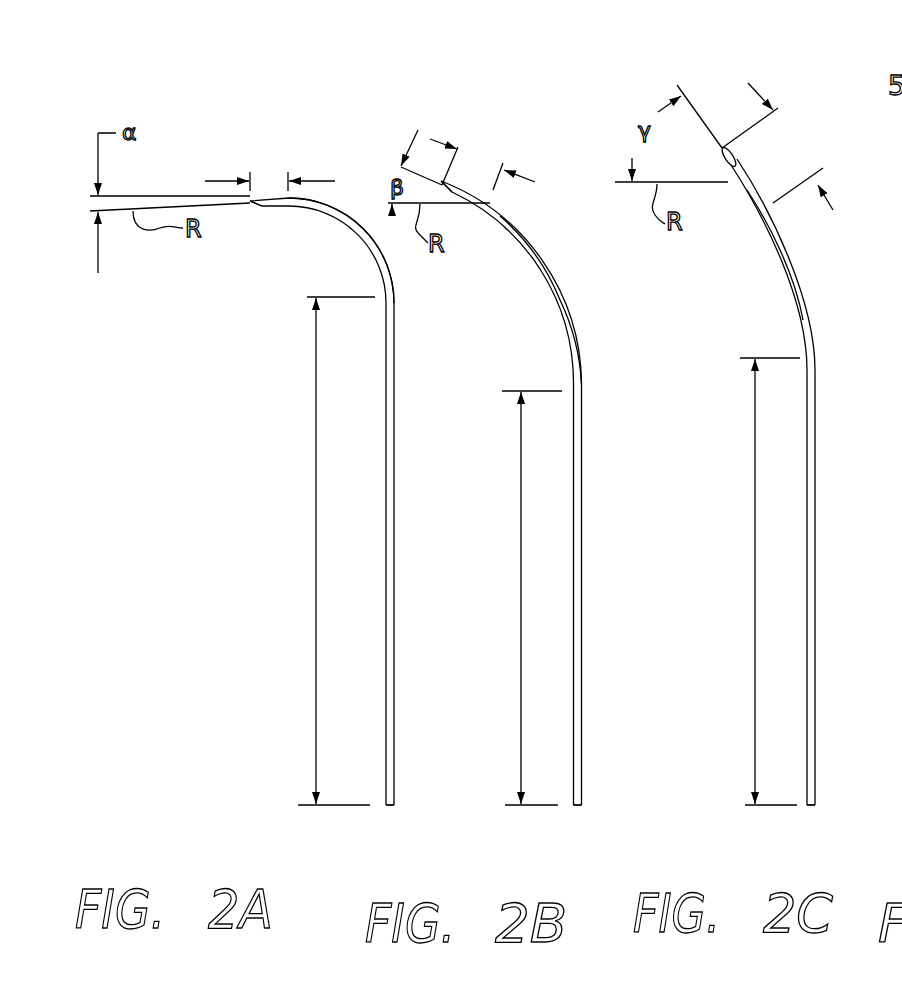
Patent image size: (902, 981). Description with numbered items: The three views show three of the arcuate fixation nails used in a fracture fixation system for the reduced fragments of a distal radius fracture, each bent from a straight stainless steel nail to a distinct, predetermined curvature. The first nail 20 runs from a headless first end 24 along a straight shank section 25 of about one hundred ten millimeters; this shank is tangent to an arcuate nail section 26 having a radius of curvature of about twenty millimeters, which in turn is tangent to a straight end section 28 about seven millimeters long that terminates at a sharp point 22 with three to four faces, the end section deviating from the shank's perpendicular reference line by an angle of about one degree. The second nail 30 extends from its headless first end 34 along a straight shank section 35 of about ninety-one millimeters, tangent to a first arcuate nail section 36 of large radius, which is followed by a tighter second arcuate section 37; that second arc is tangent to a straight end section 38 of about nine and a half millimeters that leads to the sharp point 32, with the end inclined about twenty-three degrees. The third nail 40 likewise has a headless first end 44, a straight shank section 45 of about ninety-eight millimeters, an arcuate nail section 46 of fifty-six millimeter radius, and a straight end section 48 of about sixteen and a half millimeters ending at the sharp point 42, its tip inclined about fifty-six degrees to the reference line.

In FIG. 2A, the first nail 20 is at (405, 512).
In FIG. 2A, the sharp point 22 is at (250, 207).
In FIG. 2A, the headless first end 24 is at (389, 806).
In FIG. 2A, the straight shank section 25 is at (327, 551).
In FIG. 2A, the arcuate nail section 26 is at (340, 219).
In FIG. 2A, the end section 28 is at (270, 167).
In FIG. 2B, the second nail 30 is at (590, 515).
In FIG. 2B, the sharp point 32 is at (444, 185).
In FIG. 2B, the headless first end 34 is at (577, 806).
In FIG. 2B, the straight shank section 35 is at (520, 598).
In FIG. 2B, the first arcuate nail section 36 is at (567, 336).
In FIG. 2B, the second arcuate section 37 is at (540, 248).
In FIG. 2B, the straight end section 38 is at (482, 159).
In FIG. 2C, the third nail 40 is at (826, 512).
In FIG. 2C, the sharp point 42 is at (722, 150).
In FIG. 2C, the headless first end 44 is at (811, 806).
In FIG. 2C, the straight shank section 45 is at (757, 581).
In FIG. 2C, the arcuate nail section 46 is at (786, 268).
In FIG. 2C, the end section 48 is at (777, 146).